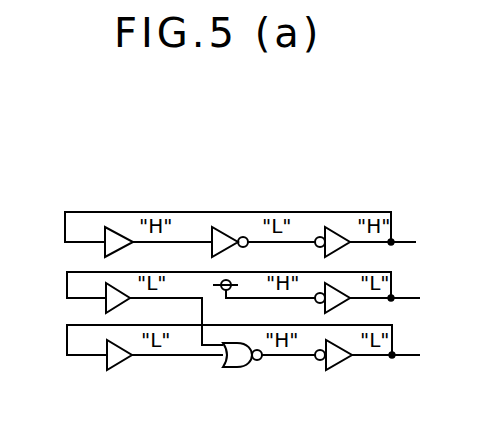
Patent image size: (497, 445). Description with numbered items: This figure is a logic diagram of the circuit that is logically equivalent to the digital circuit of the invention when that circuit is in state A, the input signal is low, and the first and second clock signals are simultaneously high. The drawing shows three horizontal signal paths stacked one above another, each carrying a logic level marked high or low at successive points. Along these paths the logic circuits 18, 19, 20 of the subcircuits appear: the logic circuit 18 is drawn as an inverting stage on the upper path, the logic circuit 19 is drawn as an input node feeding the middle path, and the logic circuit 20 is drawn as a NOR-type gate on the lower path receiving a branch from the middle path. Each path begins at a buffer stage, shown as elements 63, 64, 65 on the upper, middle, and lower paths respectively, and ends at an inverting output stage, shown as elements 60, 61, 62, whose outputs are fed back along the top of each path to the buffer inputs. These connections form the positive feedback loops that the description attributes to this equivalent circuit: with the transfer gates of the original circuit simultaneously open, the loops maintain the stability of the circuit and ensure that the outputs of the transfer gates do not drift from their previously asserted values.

The logic circuit 18 is at (226, 250).
The logic circuit 19 is at (224, 281).
The logic circuit 20 is at (238, 367).
The output inverter 60 is at (345, 249).
The output inverter 61 is at (345, 306).
The output inverter 62 is at (345, 362).
The buffer 63 is at (107, 251).
The buffer 64 is at (106, 310).
The buffer 65 is at (110, 366).